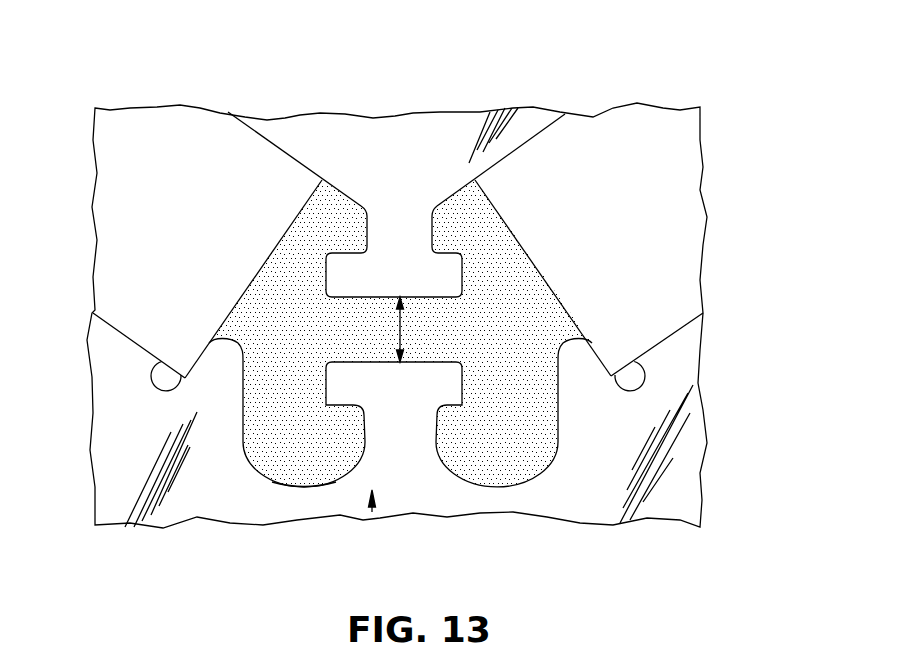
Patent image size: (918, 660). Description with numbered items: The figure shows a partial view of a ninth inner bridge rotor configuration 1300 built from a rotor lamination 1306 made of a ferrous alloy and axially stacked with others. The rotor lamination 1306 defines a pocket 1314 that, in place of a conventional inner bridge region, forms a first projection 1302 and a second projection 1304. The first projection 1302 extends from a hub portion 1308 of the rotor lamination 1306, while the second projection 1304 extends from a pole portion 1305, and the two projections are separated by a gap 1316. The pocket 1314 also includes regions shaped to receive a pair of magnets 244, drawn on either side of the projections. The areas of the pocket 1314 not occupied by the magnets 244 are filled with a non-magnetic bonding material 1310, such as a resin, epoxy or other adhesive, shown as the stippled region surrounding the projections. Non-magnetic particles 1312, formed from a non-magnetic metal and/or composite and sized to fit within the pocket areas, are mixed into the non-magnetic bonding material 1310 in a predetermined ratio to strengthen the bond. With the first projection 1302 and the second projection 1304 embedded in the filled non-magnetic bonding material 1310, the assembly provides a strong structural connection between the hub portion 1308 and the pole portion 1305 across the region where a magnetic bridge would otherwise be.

The ninth inner bridge rotor configuration 1300 is at (728, 66).
The magnets 244 is at (150, 220).
The pole portion 1305 is at (526, 118).
The second projection 1304 is at (407, 275).
The first projection 1302 is at (413, 400).
The non-magnetic particles 1312 is at (288, 443).
The non-magnetic bonding material 1310 is at (503, 440).
The pocket 1314 is at (290, 486).
The gap 1316 is at (397, 332).
The hub portion 1308 is at (372, 510).
The rotor lamination 1306 is at (682, 480).